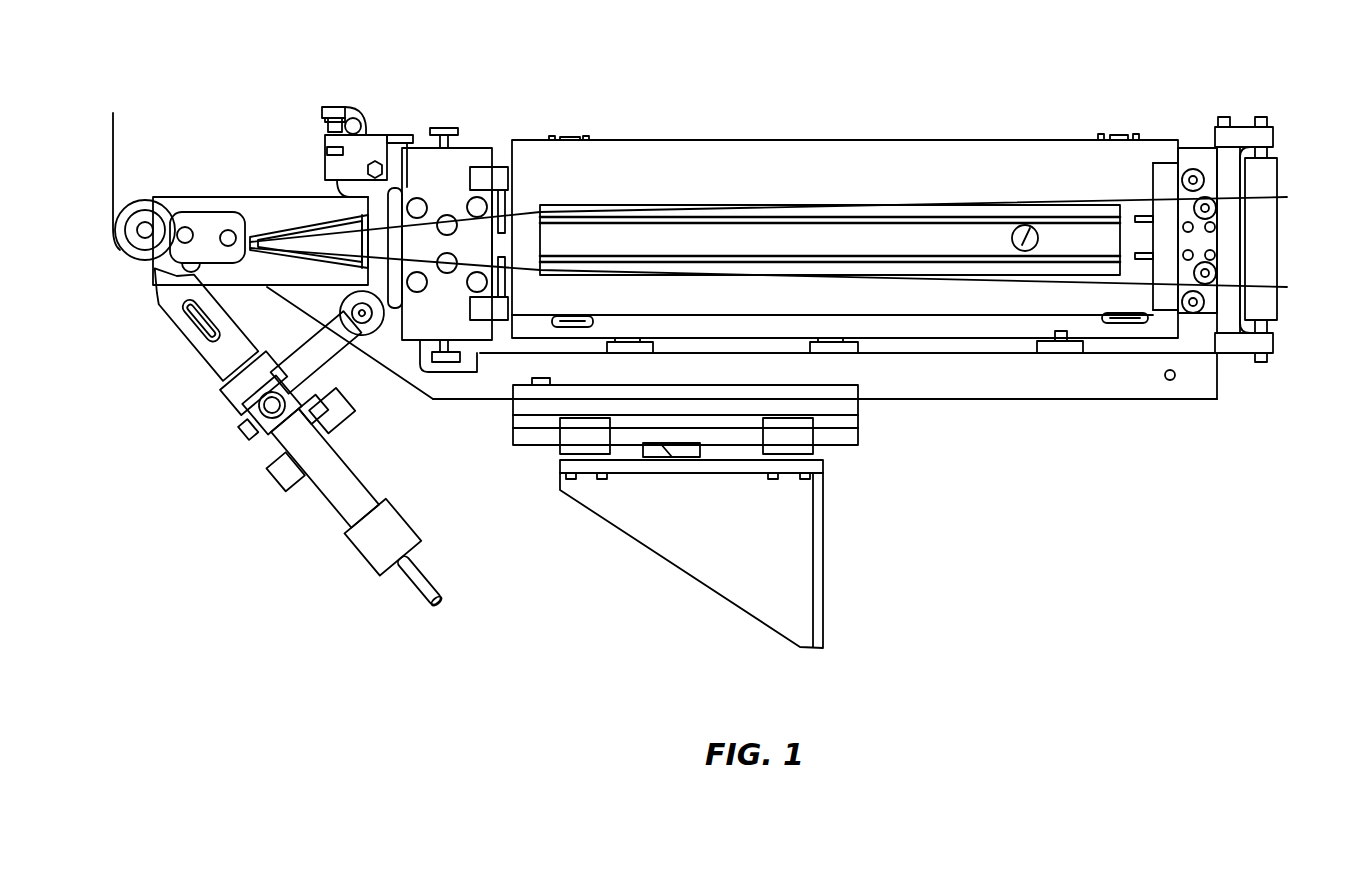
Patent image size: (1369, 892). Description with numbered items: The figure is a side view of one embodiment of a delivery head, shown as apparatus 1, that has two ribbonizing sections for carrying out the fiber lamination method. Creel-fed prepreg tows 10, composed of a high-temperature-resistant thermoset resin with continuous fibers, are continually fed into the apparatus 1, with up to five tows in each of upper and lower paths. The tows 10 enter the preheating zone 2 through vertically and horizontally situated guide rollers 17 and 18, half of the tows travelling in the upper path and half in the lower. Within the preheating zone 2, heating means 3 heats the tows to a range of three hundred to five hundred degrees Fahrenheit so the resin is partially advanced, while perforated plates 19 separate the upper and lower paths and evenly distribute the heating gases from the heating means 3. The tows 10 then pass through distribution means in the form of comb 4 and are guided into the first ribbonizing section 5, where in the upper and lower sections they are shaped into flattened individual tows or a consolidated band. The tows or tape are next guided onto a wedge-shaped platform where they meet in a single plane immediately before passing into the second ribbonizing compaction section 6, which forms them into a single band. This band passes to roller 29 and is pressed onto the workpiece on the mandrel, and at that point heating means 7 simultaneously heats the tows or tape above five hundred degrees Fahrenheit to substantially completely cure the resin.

The apparatus 1 is at (790, 118).
The preheating zone 2 is at (912, 240).
The heating means 3 is at (1025, 236).
The comb 4 is at (512, 195).
The first ribbonizing section 5 is at (448, 196).
The second ribbonizing compaction section 6 is at (210, 218).
The heating means 7 is at (213, 355).
The prepreg tows 10 is at (1225, 175).
The guide rollers 17 is at (1265, 180).
The guide rollers 18 is at (1192, 176).
The perforated plates 19 is at (887, 254).
The roller 29 is at (133, 240).